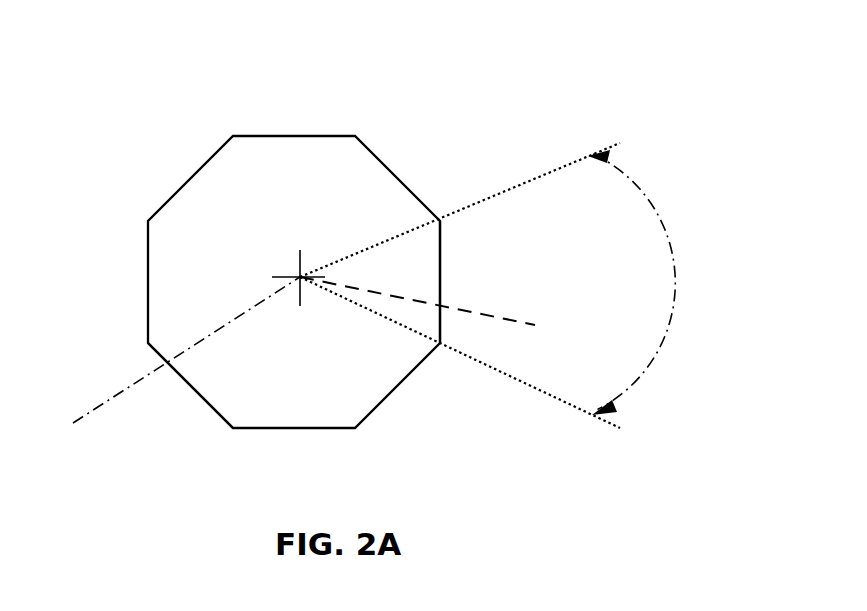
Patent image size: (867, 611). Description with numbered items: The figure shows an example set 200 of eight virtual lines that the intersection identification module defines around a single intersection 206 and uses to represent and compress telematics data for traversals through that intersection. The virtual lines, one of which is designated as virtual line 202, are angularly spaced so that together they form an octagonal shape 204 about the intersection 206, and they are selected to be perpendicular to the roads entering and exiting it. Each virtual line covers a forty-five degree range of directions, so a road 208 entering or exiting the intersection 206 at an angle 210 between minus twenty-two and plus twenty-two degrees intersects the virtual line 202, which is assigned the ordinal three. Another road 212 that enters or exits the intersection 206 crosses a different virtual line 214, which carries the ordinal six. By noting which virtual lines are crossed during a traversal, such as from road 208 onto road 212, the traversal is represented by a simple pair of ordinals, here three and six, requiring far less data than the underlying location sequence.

The set of virtual lines 200 is at (151, 91).
The virtual line 202 is at (490, 282).
The octagonal shape 204 is at (503, 114).
The intersection 206 is at (361, 183).
The road 208 is at (449, 301).
The angle 210 is at (520, 285).
The another road 212 is at (163, 350).
The virtual line 214 is at (178, 399).